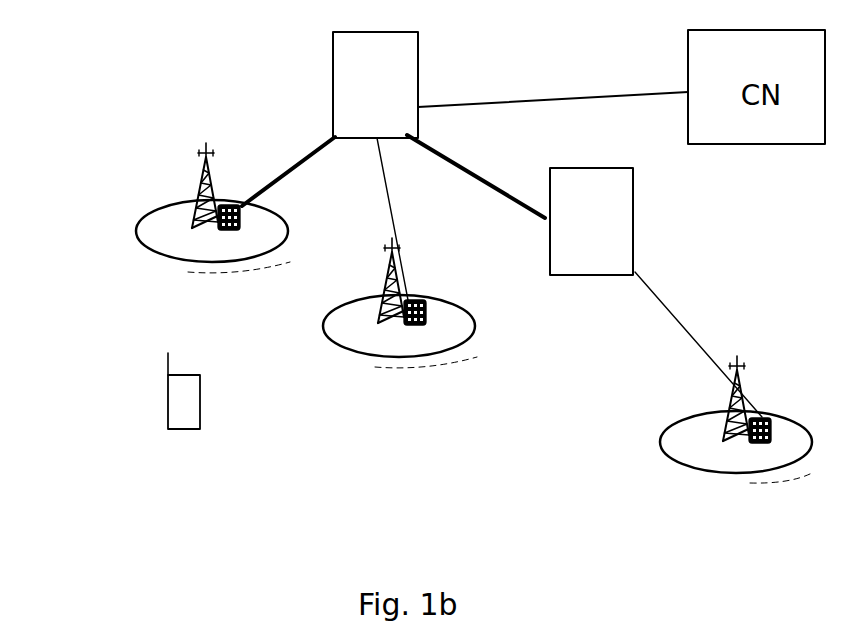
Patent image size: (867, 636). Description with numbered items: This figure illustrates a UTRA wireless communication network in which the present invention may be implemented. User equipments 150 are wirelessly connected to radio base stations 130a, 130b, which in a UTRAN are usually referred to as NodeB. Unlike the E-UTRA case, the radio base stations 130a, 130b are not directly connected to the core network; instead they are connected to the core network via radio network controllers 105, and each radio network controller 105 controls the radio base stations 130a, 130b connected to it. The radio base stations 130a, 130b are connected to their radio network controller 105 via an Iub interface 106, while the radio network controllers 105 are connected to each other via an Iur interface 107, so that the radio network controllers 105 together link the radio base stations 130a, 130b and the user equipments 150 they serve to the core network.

The radio network controller 105 is at (483, 153).
The Iub interface 106 is at (277, 168).
The Iur interface 107 is at (515, 198).
The radio base station 130a is at (188, 168).
The radio base station 130b is at (465, 297).
The user equipment 150 is at (158, 420).